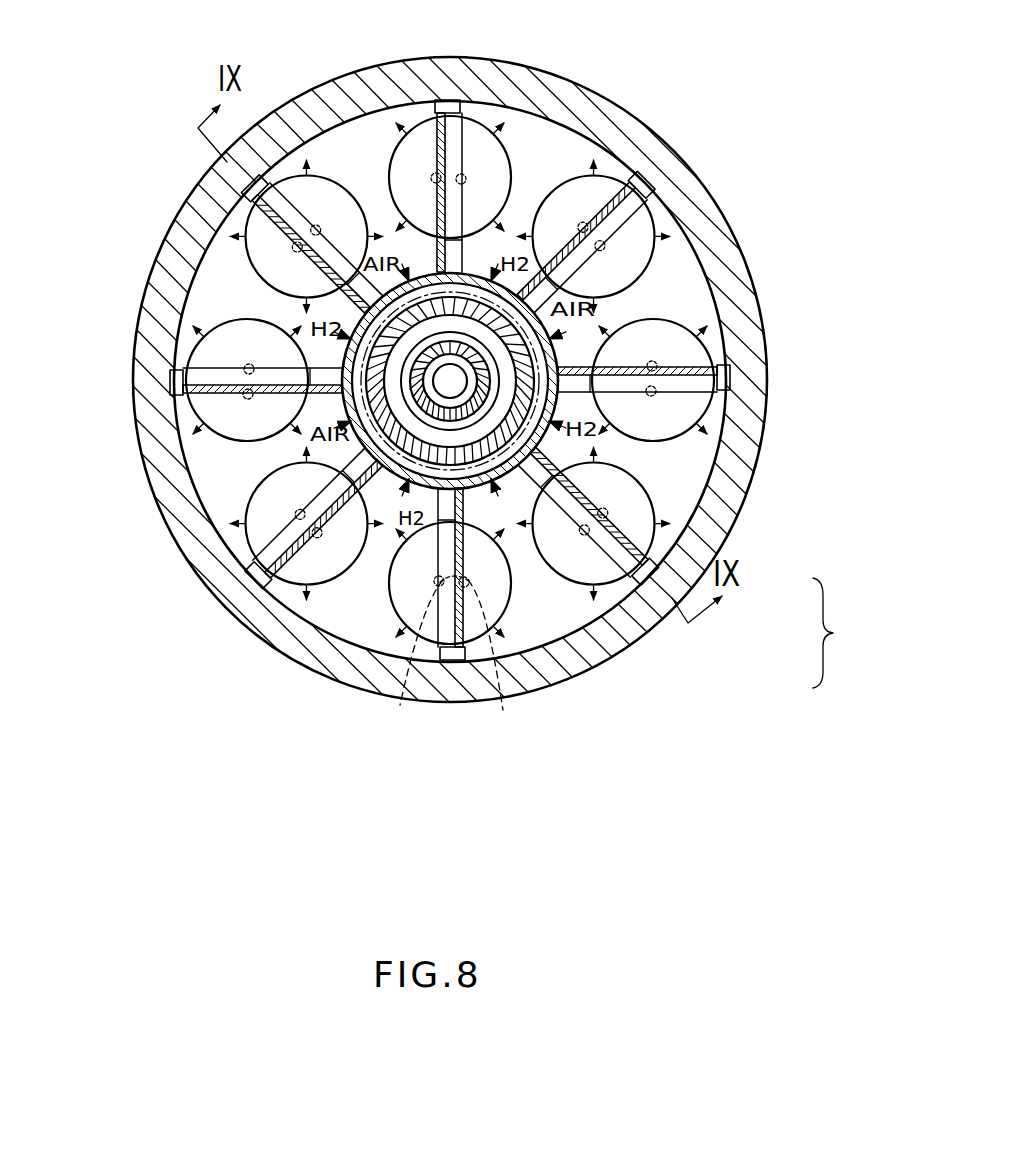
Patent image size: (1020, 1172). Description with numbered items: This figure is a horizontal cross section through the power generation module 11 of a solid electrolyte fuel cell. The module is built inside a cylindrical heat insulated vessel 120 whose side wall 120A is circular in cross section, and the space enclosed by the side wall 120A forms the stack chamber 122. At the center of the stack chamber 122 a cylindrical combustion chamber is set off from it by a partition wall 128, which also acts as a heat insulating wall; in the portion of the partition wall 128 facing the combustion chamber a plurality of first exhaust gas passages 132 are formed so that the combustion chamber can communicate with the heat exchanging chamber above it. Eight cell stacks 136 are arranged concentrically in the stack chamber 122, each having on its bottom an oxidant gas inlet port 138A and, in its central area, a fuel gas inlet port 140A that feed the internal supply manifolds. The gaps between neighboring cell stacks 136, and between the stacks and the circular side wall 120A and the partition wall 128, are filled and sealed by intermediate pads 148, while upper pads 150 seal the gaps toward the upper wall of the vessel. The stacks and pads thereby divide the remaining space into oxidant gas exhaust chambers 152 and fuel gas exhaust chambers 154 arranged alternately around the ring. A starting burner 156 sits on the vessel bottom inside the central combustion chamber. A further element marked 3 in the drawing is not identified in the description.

The power generation module 11 is at (148, 236).
The heat insulated vessel 120 is at (632, 135).
The side wall 120A is at (158, 467).
The stack chamber 122 is at (836, 636).
The partition wall (heat insulating wall) 128 is at (432, 272).
The first exhaust gas passages 132 is at (423, 268).
The cell stacks 136 is at (498, 150).
The intermediate pads 148 is at (652, 182).
The upper pads 150 is at (655, 194).
The oxidant gas exhaust chambers 152 is at (593, 608).
The fuel gas exhaust chambers 154 is at (677, 503).
The starting burner 156 is at (393, 472).
The hydrogen supply passage 3 is at (567, 342).
The oxidant gas inlet port 138A is at (503, 710).
The fuel gas inlet port 140A is at (400, 705).